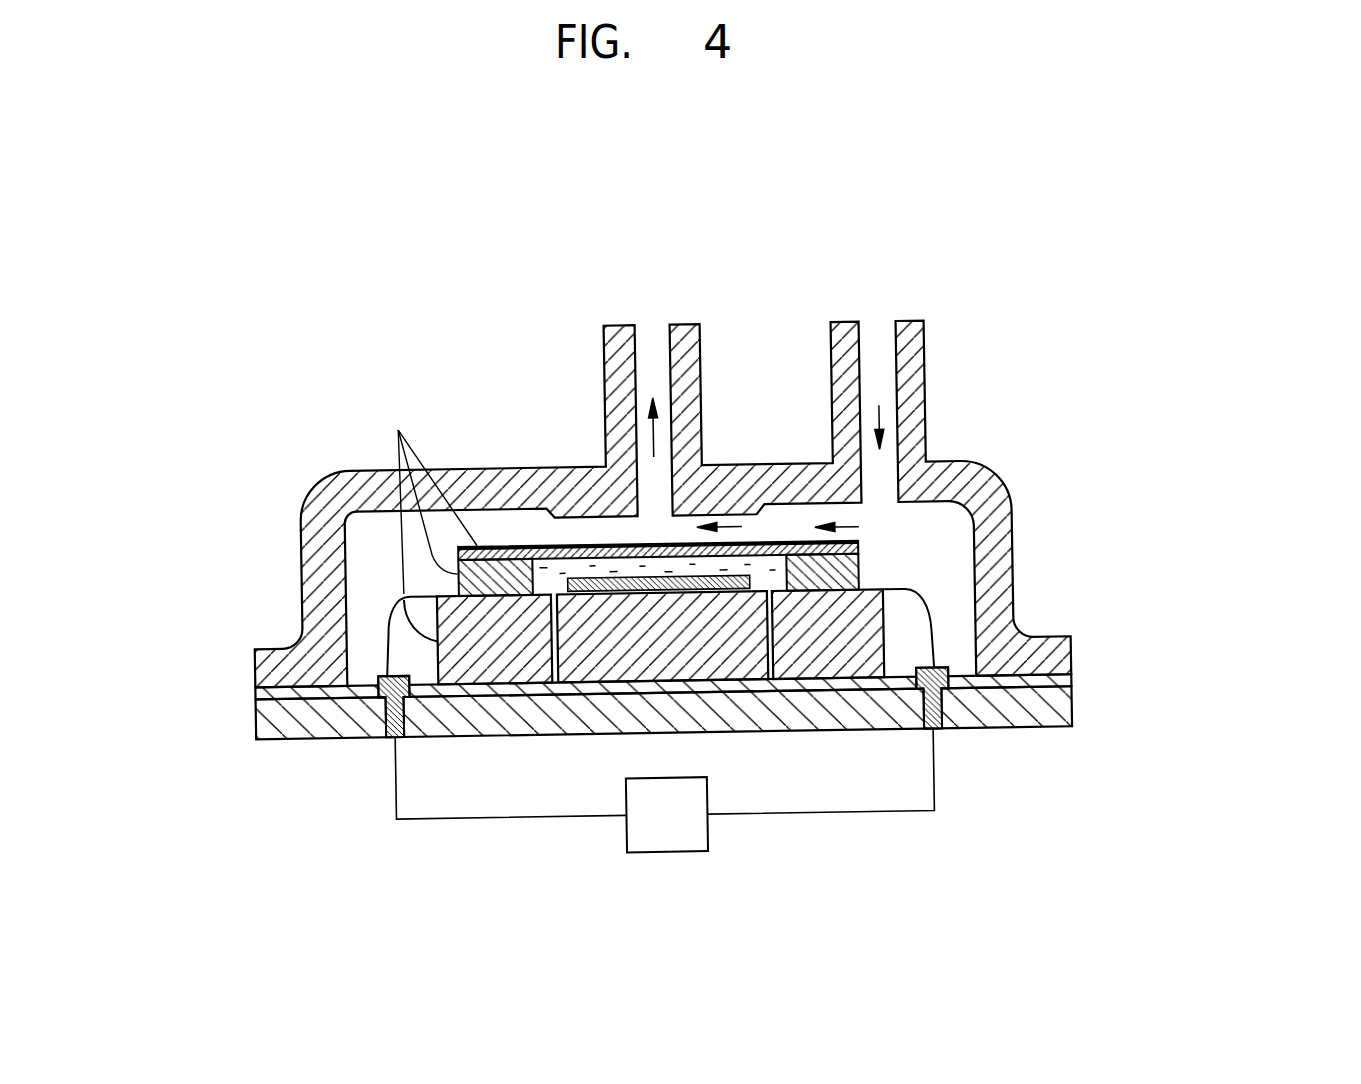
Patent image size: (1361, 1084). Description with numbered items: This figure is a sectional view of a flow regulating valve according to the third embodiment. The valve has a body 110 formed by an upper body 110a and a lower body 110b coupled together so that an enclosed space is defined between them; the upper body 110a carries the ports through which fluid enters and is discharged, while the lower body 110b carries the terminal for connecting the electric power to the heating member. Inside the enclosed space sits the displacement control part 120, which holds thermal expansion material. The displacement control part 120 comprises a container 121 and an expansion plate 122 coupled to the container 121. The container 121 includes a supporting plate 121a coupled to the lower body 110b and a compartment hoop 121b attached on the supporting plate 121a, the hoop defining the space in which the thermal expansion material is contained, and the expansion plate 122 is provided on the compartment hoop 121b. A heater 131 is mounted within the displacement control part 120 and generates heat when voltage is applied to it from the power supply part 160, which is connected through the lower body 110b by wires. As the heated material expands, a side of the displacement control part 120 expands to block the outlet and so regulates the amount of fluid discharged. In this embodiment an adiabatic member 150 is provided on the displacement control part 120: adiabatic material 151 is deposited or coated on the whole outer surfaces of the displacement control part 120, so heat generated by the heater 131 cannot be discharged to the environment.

The body 110 is at (556, 687).
The upper body 110a is at (262, 666).
The lower body 110b is at (262, 709).
The displacement control part 120 is at (896, 604).
The container 121 is at (842, 615).
The supporting plate 121a is at (885, 618).
The compartment hoop 121b is at (862, 575).
The expansion plate 122 is at (860, 547).
The heater 131 is at (593, 576).
The adiabatic member 150 is at (423, 437).
The adiabatic material 151 is at (403, 382).
The power supply part 160 is at (623, 838).